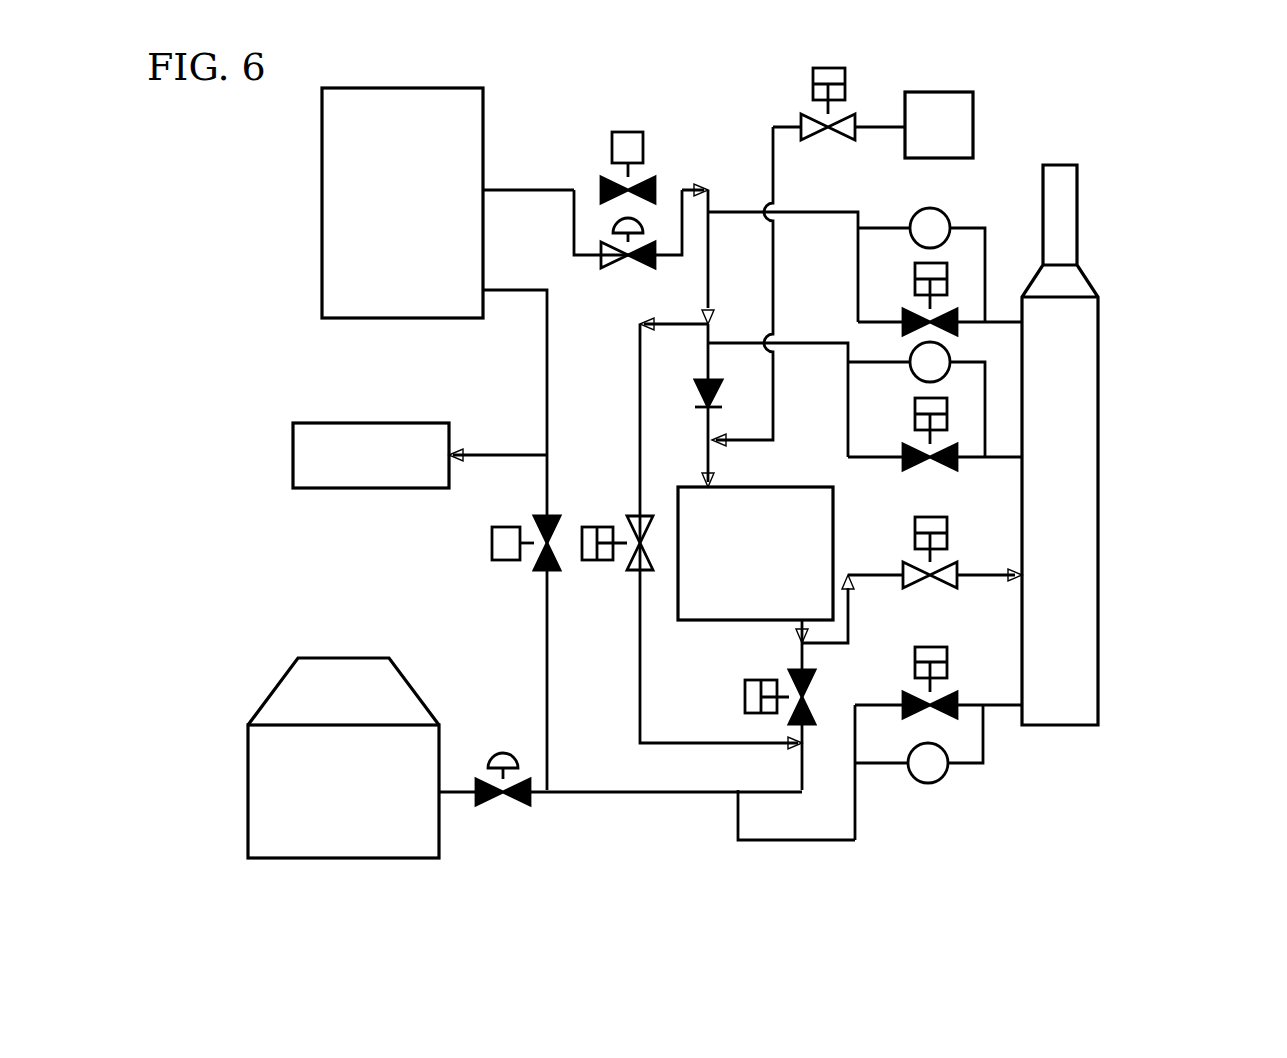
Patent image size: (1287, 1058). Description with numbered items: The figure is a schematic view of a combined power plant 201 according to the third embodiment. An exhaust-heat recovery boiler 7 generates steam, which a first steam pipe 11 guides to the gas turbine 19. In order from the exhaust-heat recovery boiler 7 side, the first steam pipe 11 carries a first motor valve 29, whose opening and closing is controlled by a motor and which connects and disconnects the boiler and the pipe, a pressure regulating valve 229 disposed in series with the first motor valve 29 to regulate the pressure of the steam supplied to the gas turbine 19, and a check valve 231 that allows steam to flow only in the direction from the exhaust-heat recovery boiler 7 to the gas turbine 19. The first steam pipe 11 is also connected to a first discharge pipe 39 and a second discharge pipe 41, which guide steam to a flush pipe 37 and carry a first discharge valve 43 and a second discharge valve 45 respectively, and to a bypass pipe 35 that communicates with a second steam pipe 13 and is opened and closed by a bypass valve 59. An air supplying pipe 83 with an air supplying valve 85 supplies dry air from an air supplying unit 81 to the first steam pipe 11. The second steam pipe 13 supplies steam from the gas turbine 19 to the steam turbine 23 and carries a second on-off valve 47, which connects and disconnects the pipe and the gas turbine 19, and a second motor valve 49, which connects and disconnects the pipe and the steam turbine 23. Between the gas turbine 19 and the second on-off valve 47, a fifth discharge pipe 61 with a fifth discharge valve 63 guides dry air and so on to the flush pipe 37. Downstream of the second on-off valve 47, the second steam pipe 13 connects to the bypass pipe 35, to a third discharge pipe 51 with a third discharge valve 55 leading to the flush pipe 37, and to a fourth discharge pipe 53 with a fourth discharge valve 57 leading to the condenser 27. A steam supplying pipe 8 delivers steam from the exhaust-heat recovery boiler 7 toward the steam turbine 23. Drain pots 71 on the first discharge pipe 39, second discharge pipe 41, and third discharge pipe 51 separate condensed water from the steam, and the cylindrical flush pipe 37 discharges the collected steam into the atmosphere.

The combined power plant 201 is at (1166, 135).
The exhaust-heat recovery boiler 7 is at (322, 198).
The first steam pipe 11 is at (522, 190).
The first motor valve 29 is at (628, 132).
The pressure regulating valve 229 is at (615, 267).
The first discharge pipe 39 is at (730, 212).
The second discharge pipe 41 is at (733, 343).
The air supplying pipe 83 is at (877, 127).
The air supplying valve 85 is at (813, 82).
The air supplying unit 81 is at (936, 92).
The drain pot 71 is at (915, 218).
The first discharge valve 43 is at (915, 272).
The second discharge valve 45 is at (915, 406).
The bypass pipe 35 is at (640, 373).
The check valve 231 is at (700, 396).
The gas turbine 19 is at (805, 487).
The fifth discharge pipe 61 is at (870, 575).
The fifth discharge valve 63 is at (947, 522).
The second on-off valve 47 is at (745, 697).
The third discharge valve 55 is at (915, 660).
The third discharge pipe 51 is at (805, 840).
The flush pipe 37 is at (1062, 725).
The steam supplying pipe 8 is at (547, 362).
The steam turbine 23 is at (293, 452).
The second motor valve 49 is at (492, 545).
The bypass valve 59 is at (592, 527).
The condenser 27 is at (248, 795).
The fourth discharge pipe 53 is at (460, 792).
The fourth discharge valve 57 is at (503, 753).
The second steam pipe 13 is at (637, 792).